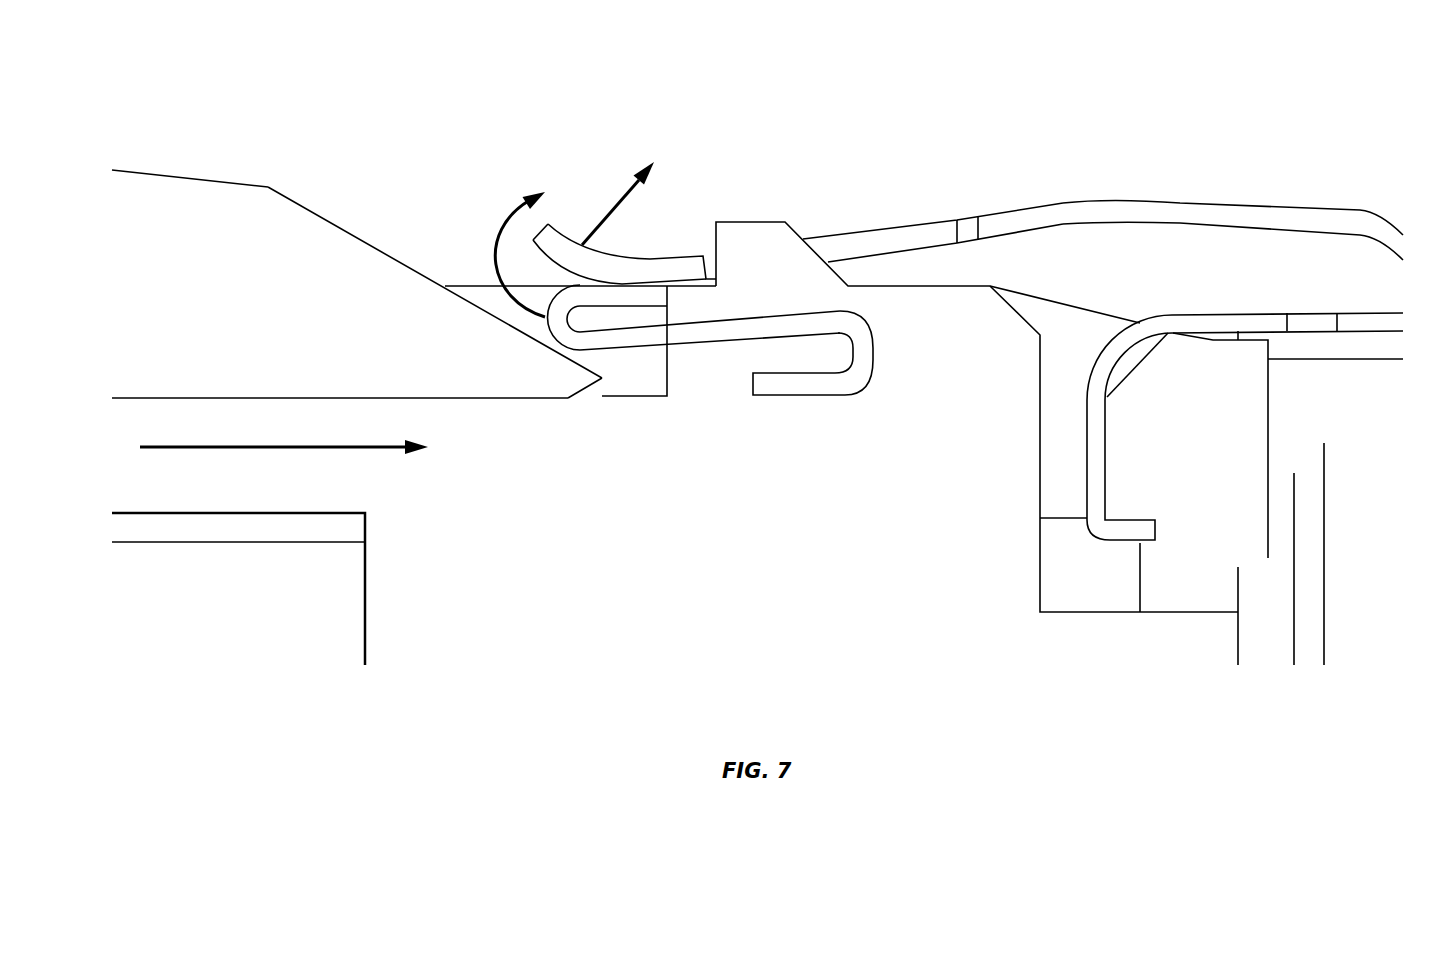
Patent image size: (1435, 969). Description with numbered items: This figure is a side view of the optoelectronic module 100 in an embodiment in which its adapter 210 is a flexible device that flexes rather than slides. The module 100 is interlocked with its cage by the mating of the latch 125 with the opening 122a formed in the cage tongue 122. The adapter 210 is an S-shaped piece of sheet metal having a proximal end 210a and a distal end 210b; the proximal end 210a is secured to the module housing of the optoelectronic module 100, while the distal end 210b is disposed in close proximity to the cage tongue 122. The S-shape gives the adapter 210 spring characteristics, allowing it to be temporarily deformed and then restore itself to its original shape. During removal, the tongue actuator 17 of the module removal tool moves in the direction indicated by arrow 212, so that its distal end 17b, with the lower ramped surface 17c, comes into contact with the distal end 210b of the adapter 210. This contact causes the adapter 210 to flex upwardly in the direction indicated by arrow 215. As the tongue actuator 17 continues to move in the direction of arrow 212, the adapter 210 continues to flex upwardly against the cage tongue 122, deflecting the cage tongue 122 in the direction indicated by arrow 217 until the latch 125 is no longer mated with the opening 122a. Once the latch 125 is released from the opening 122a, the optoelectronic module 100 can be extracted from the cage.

The tongue actuator 17 is at (222, 180).
The distal end 17b is at (601, 384).
The ramped bottom surface 17c is at (400, 262).
The optoelectronic module 100 is at (752, 509).
The cage tongue 122 is at (1065, 203).
The opening 122a is at (883, 230).
The latch 125 is at (758, 225).
The adapter 210 is at (714, 333).
The proximal end 210a is at (758, 397).
The distal end 210b is at (647, 302).
The arrow 212 is at (213, 443).
The arrow 215 is at (494, 243).
The arrow 217 is at (612, 204).